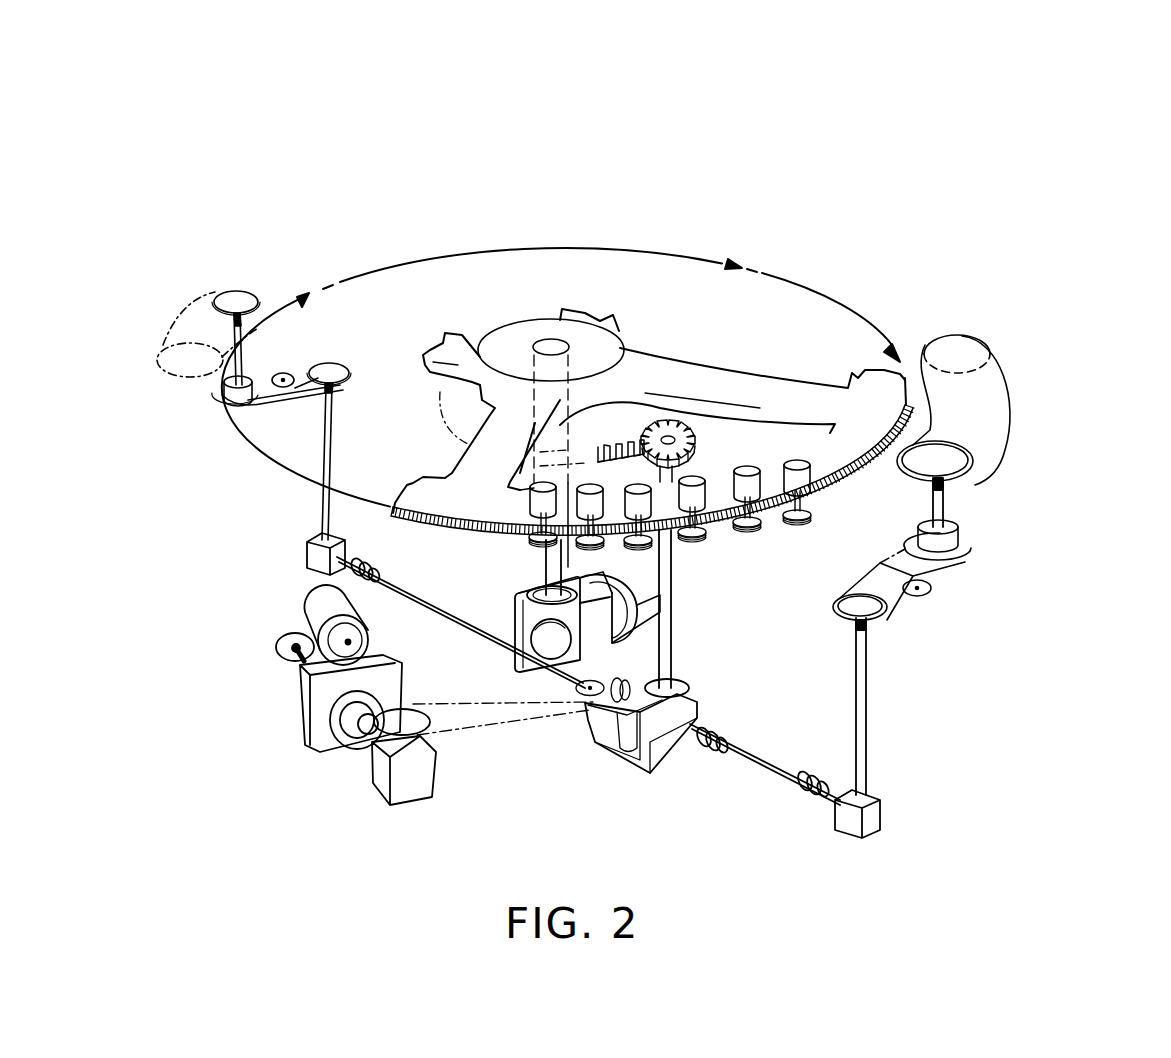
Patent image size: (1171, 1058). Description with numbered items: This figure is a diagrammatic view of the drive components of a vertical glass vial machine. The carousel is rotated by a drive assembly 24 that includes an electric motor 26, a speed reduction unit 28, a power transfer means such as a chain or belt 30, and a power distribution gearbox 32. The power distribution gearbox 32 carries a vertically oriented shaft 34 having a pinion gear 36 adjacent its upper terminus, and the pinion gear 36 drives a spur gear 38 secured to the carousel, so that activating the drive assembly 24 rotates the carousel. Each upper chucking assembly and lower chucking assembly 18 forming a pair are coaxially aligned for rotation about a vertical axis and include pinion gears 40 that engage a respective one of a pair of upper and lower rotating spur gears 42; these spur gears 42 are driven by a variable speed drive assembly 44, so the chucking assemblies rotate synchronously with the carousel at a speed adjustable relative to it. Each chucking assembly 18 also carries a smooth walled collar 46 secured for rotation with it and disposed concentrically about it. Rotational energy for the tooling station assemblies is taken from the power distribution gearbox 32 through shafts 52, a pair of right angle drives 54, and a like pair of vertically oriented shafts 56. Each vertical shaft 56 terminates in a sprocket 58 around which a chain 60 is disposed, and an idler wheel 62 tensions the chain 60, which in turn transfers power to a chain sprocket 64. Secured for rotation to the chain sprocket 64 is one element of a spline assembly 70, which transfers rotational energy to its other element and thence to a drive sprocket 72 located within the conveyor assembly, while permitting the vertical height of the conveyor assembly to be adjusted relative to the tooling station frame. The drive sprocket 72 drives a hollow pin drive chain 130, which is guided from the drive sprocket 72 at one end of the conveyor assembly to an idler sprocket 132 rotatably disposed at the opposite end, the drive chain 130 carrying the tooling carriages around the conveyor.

The lower chucking assembly 18 is at (752, 455).
The drive assembly 24 is at (333, 853).
The electric motor 26 is at (315, 610).
The speed reduction unit 28 is at (298, 727).
The chain or belt 30 is at (490, 730).
The power distribution gearbox 32 is at (630, 753).
The vertically oriented shaft 34 is at (672, 655).
The pinion gear 36 is at (682, 423).
The spur gear 38 is at (628, 428).
The pinion gears 40 is at (743, 530).
The upper and lower rotating spur gears 42 is at (877, 405).
The variable speed drive assembly 44 is at (595, 645).
The smooth walled collar 46 is at (752, 472).
The shafts 52 is at (478, 630).
The right angle drives 54 is at (287, 530).
The vertically oriented shafts 56 is at (865, 730).
The sprocket 58 is at (880, 605).
The chain 60 is at (880, 562).
The idler wheel 62 is at (932, 590).
The chain sprocket 64 is at (970, 552).
The spline assembly 70 is at (945, 500).
The drive sprocket 72 is at (958, 462).
The drive chain 130 is at (1015, 405).
The idler sprocket 132 is at (972, 352).